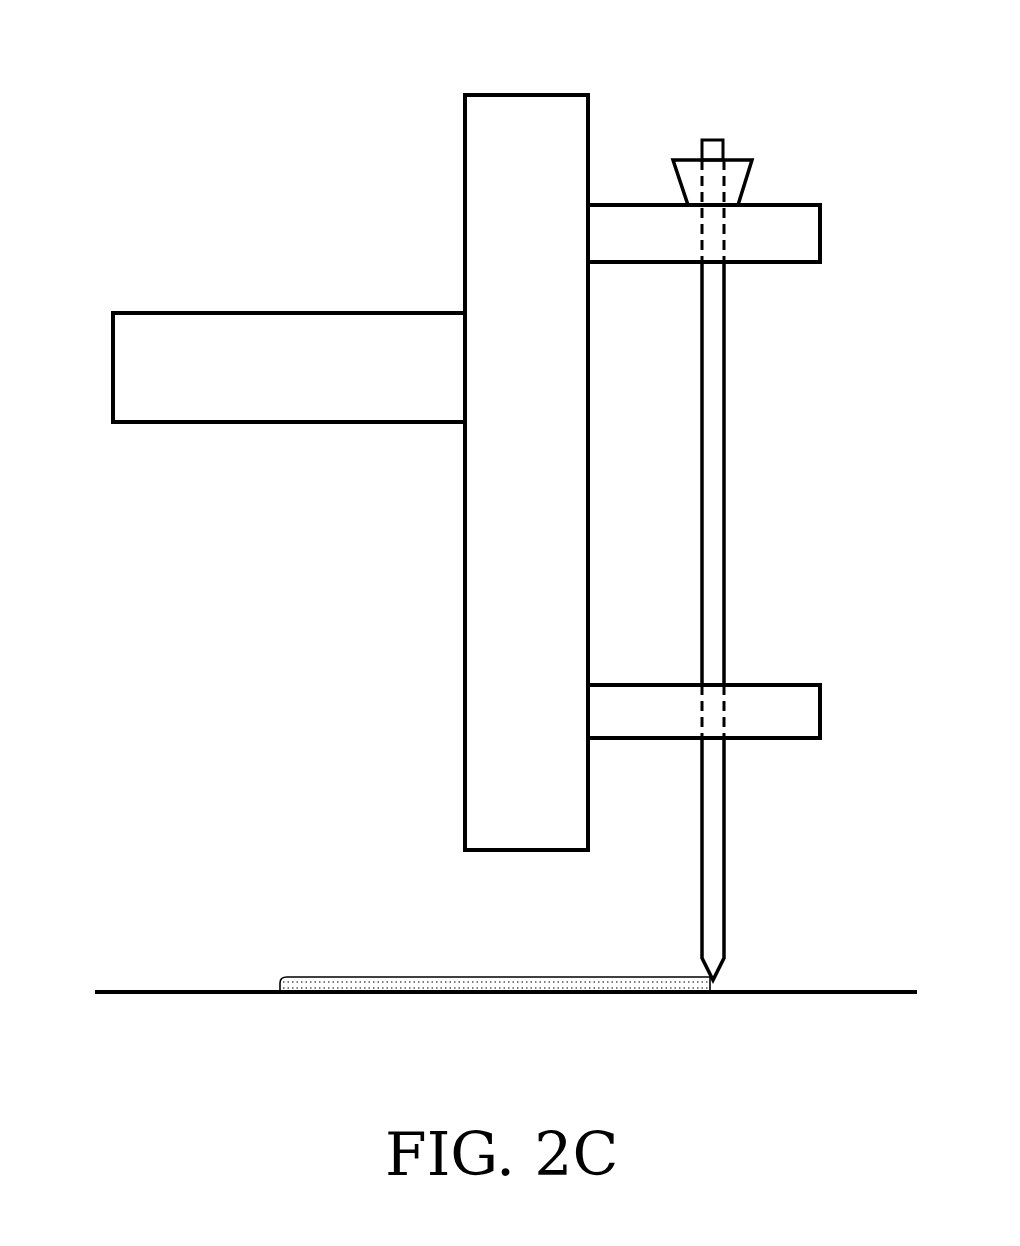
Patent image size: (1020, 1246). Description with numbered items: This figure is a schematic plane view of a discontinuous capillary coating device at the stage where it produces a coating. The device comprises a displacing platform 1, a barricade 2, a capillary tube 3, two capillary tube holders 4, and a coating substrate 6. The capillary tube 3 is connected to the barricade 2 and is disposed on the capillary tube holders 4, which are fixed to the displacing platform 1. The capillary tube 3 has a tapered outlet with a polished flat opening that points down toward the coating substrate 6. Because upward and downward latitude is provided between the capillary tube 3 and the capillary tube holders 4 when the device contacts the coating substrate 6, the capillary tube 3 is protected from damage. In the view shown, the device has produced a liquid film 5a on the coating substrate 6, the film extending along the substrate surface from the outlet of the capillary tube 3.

The displacing platform 1 is at (528, 95).
The barricade 2 is at (738, 160).
The capillary tube 3 is at (712, 140).
The capillary tube holders 4 is at (775, 205).
The liquid film 5a is at (330, 977).
The coating substrate 6 is at (152, 992).